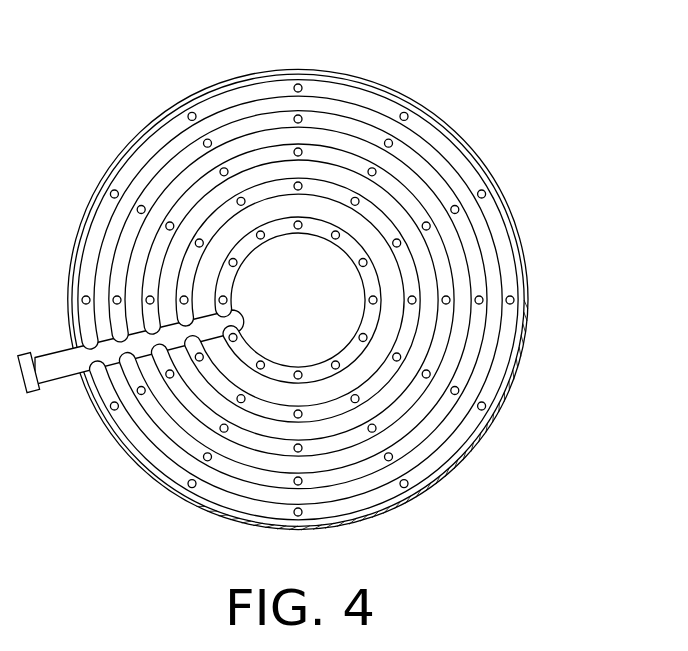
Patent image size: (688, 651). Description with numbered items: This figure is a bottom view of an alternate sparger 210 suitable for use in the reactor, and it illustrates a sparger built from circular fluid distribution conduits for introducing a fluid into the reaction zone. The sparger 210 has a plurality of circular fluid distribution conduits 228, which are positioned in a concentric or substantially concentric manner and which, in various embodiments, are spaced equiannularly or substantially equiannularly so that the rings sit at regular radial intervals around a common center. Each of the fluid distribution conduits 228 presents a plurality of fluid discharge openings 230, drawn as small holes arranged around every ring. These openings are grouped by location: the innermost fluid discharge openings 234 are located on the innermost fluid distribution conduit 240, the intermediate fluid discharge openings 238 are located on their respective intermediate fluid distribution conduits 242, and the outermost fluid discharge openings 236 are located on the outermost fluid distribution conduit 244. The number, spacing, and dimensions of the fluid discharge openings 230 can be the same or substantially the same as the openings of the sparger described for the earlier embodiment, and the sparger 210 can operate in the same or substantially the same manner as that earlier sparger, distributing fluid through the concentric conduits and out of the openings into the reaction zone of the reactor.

The alternate sparger 210 is at (354, 79).
The circular fluid distribution conduits 228 is at (516, 357).
The fluid discharge openings 230 is at (408, 114).
The innermost fluid discharge openings 234 is at (369, 301).
The outermost fluid discharge openings 236 is at (514, 302).
The intermediate fluid discharge openings 238 is at (415, 297).
The innermost fluid distribution conduit 240 is at (352, 346).
The intermediate fluid distribution conduits 242 is at (382, 392).
The outermost fluid distribution conduit 244 is at (496, 406).